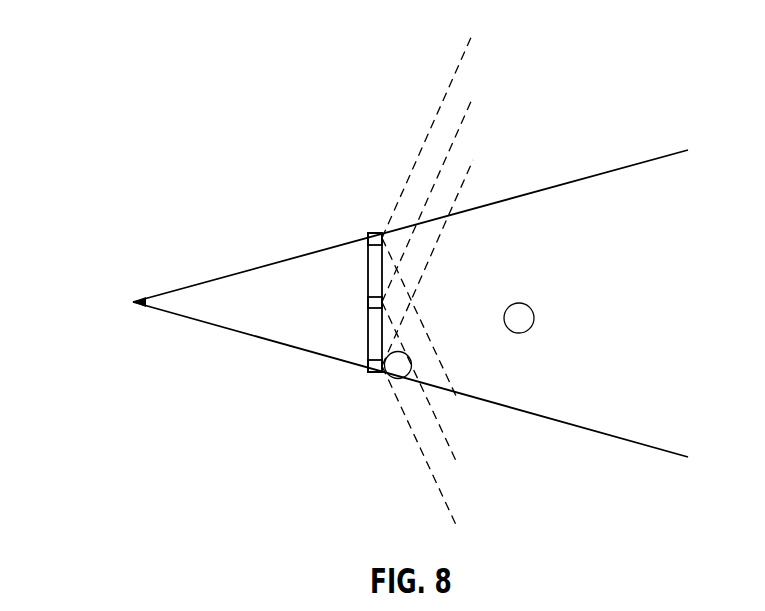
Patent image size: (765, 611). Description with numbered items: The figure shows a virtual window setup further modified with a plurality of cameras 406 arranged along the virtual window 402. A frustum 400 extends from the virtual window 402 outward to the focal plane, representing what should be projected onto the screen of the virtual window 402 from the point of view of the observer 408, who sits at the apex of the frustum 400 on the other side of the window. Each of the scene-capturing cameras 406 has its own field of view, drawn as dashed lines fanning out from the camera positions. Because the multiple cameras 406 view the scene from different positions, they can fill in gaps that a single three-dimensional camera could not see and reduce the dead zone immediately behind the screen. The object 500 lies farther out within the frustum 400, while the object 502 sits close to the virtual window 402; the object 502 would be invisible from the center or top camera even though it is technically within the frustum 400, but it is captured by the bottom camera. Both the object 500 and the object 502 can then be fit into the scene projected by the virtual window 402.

The frustum 400 is at (553, 428).
The virtual window 402 is at (343, 390).
The scene-capturing camera 406 is at (392, 360).
The observer 408 is at (114, 308).
The object 500 is at (540, 294).
The object 502 is at (421, 359).